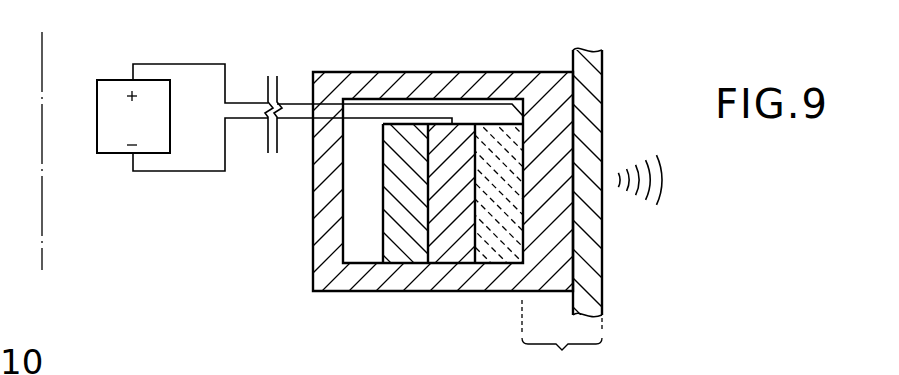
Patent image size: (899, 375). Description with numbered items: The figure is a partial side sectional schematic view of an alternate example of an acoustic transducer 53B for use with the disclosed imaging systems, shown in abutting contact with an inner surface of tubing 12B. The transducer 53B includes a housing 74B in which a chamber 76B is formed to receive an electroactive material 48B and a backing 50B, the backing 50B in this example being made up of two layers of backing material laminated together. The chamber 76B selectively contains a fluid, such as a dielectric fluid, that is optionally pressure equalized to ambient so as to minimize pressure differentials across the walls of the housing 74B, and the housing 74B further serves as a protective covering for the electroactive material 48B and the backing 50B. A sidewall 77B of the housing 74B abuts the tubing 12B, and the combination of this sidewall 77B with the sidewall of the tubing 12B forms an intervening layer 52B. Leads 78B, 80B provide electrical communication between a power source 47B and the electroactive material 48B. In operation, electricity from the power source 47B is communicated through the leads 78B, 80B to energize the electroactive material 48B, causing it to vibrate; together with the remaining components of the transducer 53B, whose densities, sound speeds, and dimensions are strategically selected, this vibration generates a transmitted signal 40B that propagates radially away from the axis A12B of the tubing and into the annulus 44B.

The tubing 12B is at (585, 95).
The transmitted signal 40B is at (645, 210).
The annulus 44B is at (730, 188).
The power source 47B is at (108, 154).
The electroactive material 48B is at (538, 272).
The backing 50B is at (362, 215).
The intervening layer 52B is at (562, 351).
The acoustic transducer 53B is at (358, 294).
The housing 74B is at (372, 82).
The chamber 76B is at (358, 147).
The sidewall 77B is at (543, 71).
The lead 78B is at (477, 103).
The lead 80B is at (420, 116).
The axis A12B is at (43, 241).